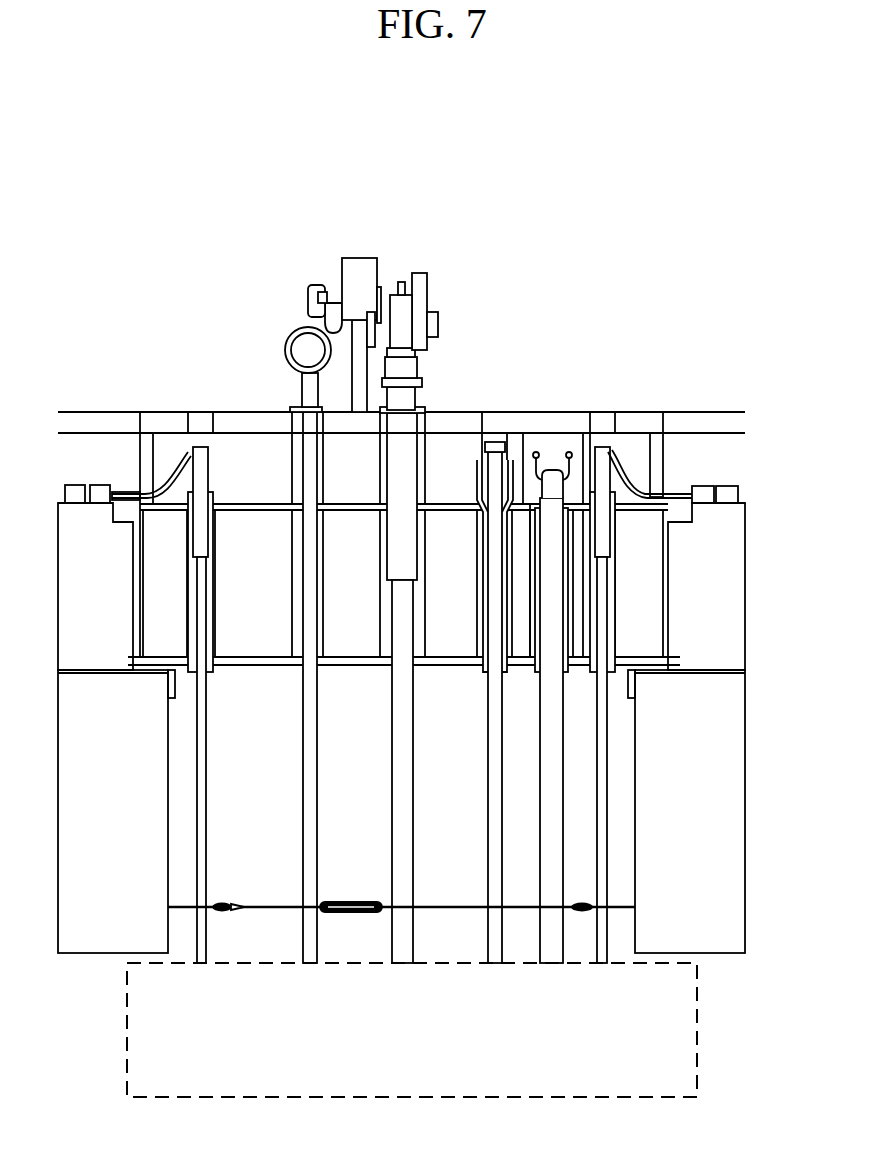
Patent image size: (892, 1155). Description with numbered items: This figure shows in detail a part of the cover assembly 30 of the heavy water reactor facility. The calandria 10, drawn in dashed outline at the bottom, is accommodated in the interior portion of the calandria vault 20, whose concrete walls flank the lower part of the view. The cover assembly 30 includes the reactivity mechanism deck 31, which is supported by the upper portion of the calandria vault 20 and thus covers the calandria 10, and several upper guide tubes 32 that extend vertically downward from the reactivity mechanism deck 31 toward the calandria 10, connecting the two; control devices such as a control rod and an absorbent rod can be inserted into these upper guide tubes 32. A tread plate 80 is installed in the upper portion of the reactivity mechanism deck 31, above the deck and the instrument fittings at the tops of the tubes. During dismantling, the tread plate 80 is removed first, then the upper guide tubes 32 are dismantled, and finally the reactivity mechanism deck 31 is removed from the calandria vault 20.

The calandria 10 is at (698, 1032).
The calandria vault 20 is at (722, 838).
The cover assembly 30 is at (784, 572).
The reactivity mechanism deck 31 is at (642, 588).
The upper guide tube 32 is at (400, 753).
The tread plate 80 is at (641, 420).